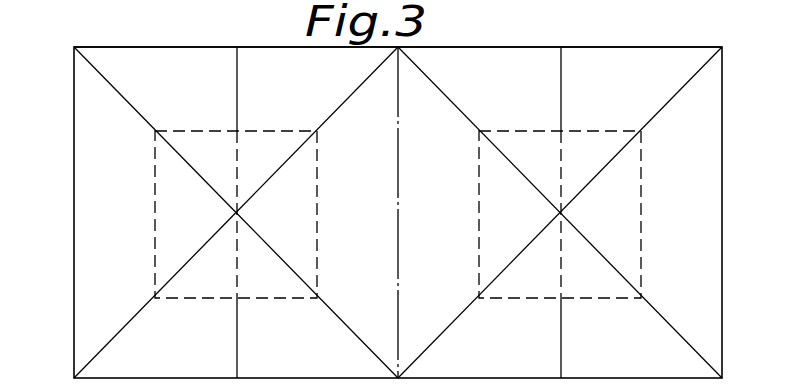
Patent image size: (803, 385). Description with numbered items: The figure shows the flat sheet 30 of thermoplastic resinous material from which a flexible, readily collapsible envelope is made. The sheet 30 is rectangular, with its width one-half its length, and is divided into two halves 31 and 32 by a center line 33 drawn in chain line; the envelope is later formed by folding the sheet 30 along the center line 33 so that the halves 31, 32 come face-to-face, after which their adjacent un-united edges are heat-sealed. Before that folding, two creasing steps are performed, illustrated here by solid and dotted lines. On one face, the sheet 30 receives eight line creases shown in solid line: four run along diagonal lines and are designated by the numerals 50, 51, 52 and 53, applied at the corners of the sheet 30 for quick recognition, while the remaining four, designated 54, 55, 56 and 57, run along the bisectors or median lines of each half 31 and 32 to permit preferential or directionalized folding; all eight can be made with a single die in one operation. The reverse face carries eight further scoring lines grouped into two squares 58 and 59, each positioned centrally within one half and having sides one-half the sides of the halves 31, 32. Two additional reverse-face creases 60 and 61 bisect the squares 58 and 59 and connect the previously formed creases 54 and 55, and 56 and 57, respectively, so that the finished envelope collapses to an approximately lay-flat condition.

The flat sheet 30 is at (80, 224).
The half 31 is at (196, 49).
The half 32 is at (644, 54).
The center line 33 is at (398, 221).
The diagonal crease line 50 is at (668, 103).
The diagonal crease line 51 is at (659, 316).
The diagonal crease line 52 is at (135, 319).
The diagonal crease line 53 is at (104, 78).
The median crease line 54 is at (561, 90).
The median crease line 55 is at (561, 338).
The median crease line 56 is at (237, 340).
The median crease line 57 is at (237, 86).
The square scoring lines 58 is at (641, 200).
The square scoring lines 59 is at (317, 197).
The bisecting line crease 60 is at (561, 158).
The bisecting line crease 61 is at (237, 158).